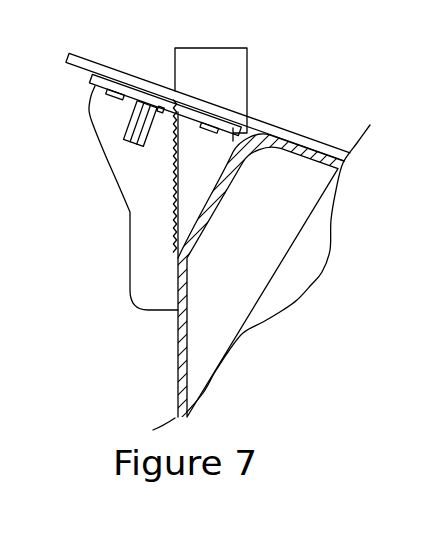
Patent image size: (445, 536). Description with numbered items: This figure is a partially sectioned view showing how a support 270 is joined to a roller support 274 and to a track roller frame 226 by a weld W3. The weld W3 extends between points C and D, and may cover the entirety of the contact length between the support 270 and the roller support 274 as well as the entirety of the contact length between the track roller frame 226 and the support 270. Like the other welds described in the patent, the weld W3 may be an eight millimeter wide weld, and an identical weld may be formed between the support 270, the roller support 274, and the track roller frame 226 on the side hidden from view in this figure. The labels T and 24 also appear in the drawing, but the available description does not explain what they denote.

The thickness of plate T is at (91, 20).
The point D is at (163, 108).
The roller support 274 is at (232, 62).
The support 270 is at (103, 157).
The weld W3 is at (177, 226).
The body 24 is at (261, 277).
The point C is at (169, 312).
The track roller frame 226 is at (178, 388).